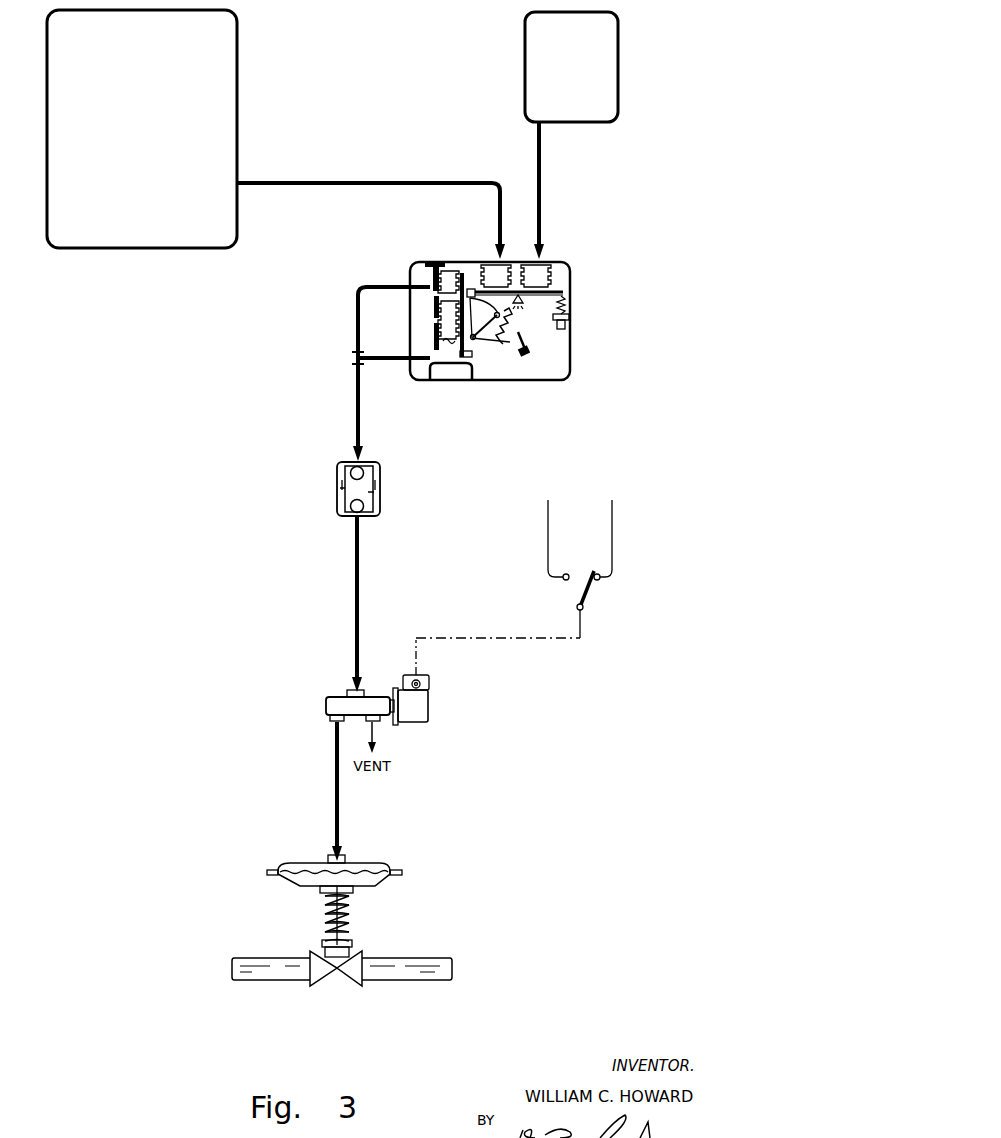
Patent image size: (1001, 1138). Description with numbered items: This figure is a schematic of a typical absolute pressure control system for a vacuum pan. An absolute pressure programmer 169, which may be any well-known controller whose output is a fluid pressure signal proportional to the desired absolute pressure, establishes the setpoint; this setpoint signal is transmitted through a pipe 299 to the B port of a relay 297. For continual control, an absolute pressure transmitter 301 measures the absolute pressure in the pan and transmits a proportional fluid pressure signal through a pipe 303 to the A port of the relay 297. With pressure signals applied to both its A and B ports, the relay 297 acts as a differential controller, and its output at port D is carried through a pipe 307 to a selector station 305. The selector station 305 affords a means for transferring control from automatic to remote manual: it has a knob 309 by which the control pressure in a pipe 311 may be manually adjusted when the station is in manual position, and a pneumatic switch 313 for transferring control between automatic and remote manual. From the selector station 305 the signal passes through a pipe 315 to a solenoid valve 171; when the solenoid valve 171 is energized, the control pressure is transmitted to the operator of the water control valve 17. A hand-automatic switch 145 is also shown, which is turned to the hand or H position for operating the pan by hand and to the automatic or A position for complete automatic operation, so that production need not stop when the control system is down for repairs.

The absolute pressure programmer 169 is at (238, 67).
The pipe 299 is at (355, 187).
The absolute pressure transmitter 301 is at (619, 65).
The pipe 303 is at (543, 185).
The relay 297 is at (572, 291).
The pipe 307 is at (357, 388).
The selector station 305 is at (362, 489).
The pneumatic switch 313 is at (353, 466).
The knob 309 is at (353, 512).
The pipe 311 is at (353, 614).
The hand-automatic switch 145 is at (586, 605).
The solenoid valve 171 is at (410, 722).
The pipe 315 is at (335, 786).
The water control valve 17 is at (355, 915).